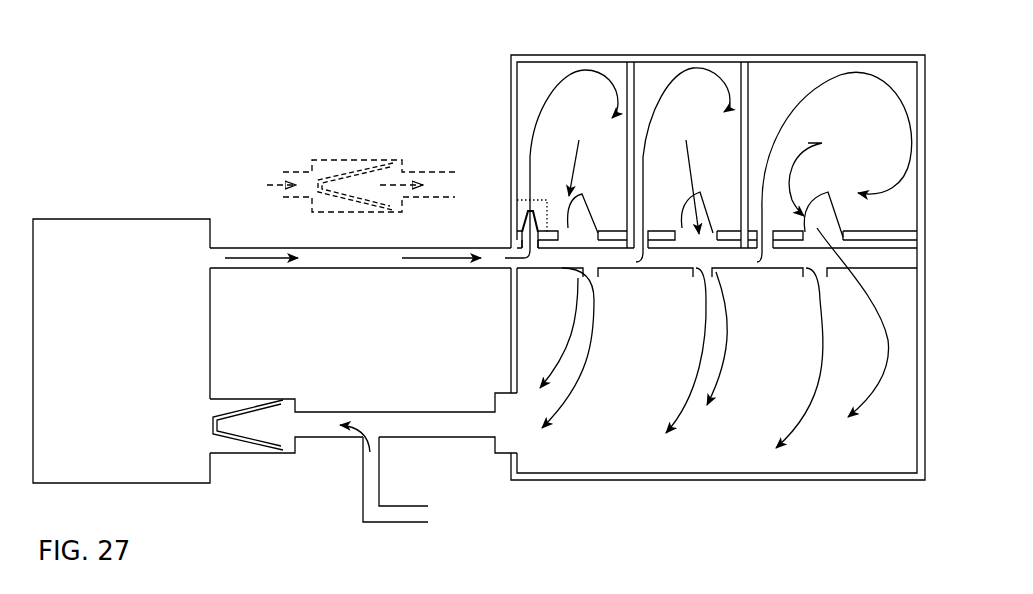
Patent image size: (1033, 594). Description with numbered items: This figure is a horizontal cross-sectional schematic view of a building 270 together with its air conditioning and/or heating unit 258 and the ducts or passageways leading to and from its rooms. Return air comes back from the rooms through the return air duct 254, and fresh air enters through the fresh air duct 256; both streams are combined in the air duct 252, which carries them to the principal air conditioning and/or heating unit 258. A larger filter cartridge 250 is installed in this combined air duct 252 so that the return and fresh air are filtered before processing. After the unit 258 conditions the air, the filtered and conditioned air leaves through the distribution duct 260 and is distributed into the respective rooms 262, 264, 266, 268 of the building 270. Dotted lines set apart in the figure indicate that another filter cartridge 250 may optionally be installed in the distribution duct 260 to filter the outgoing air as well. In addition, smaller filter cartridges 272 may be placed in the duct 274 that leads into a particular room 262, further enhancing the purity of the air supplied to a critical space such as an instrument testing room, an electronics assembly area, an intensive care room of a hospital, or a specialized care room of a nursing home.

The filter cartridge 250 is at (229, 404).
The air duct 252 is at (236, 455).
The return air duct 254 is at (457, 411).
The fresh air duct 256 is at (389, 503).
The air conditioning and/or heating unit 258 is at (188, 219).
The distribution duct 260 is at (380, 270).
The room 262 is at (542, 62).
The room 264 is at (655, 62).
The room 266 is at (790, 60).
The room 268 is at (730, 480).
The building 270 is at (506, 306).
The smaller filter cartridge 272 is at (519, 216).
The duct 274 is at (516, 247).